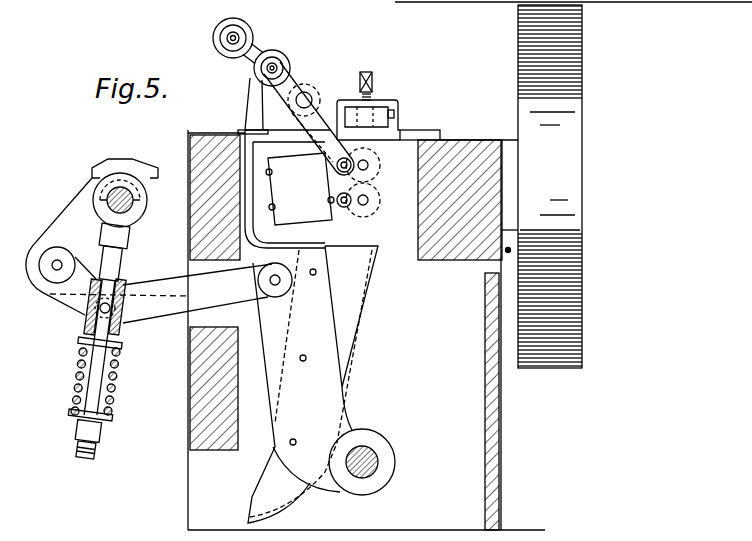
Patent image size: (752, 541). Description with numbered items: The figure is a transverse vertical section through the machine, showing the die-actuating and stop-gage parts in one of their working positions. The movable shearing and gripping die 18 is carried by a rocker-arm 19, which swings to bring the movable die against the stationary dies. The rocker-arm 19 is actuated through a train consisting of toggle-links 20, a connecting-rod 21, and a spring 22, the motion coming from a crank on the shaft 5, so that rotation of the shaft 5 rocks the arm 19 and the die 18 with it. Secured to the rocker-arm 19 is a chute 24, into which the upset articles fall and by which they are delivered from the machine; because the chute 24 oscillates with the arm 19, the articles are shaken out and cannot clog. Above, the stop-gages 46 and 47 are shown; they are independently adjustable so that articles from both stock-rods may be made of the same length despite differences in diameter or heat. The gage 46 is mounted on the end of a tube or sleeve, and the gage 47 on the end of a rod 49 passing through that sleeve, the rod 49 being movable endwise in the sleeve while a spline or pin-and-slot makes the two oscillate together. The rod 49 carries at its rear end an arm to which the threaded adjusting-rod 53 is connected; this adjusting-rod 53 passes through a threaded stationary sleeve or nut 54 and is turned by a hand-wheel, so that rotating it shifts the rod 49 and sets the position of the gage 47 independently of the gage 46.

The shaft 5 is at (107, 190).
The movable shearing and gripping die 18 is at (300, 189).
The rocker-arm 19 is at (321, 386).
The toggle-links 20 is at (175, 302).
The connecting-rod 21 is at (112, 258).
The spring 22 is at (76, 387).
The chute 24 is at (351, 344).
The stop-gage 46 is at (337, 186).
The stop-gage 47 is at (347, 159).
The rod 49 is at (311, 95).
The adjusting-rod 53 is at (224, 44).
The threaded stationary sleeve or nut 54 is at (289, 65).